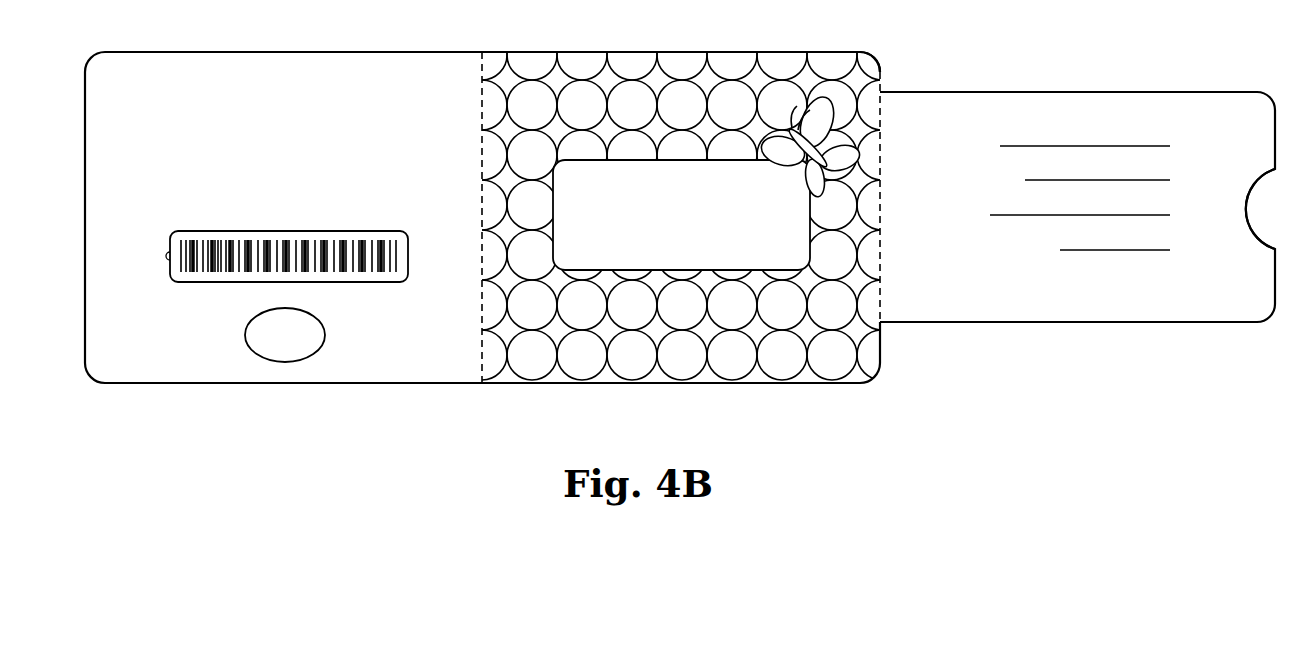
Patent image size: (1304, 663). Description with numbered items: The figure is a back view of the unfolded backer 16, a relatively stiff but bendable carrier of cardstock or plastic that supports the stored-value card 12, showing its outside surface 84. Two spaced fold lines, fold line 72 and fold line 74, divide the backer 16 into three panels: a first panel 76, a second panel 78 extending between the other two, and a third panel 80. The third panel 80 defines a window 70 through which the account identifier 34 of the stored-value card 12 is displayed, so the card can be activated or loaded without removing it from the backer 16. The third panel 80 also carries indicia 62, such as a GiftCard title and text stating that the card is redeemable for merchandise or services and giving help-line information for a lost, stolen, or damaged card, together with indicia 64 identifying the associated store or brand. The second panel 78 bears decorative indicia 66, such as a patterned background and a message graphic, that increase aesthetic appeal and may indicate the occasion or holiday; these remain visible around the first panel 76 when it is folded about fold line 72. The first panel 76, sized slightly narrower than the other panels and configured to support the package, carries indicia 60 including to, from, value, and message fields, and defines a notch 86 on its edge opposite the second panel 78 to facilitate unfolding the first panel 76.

The stored-value card 12 is at (185, 273).
The backer 16 is at (852, 50).
The account identifier 34 is at (218, 273).
The indicia 60 is at (1078, 128).
The indicia 62 is at (366, 118).
The indicia 64 is at (319, 356).
The decorative indicia 66 is at (762, 130).
The window 70 is at (172, 268).
The fold line 72 is at (880, 290).
The fold line 74 is at (482, 350).
The first panel 76 is at (1087, 310).
The second panel 78 is at (768, 376).
The third panel 80 is at (377, 363).
The outside surface 84 is at (198, 117).
The notch 86 is at (1249, 207).